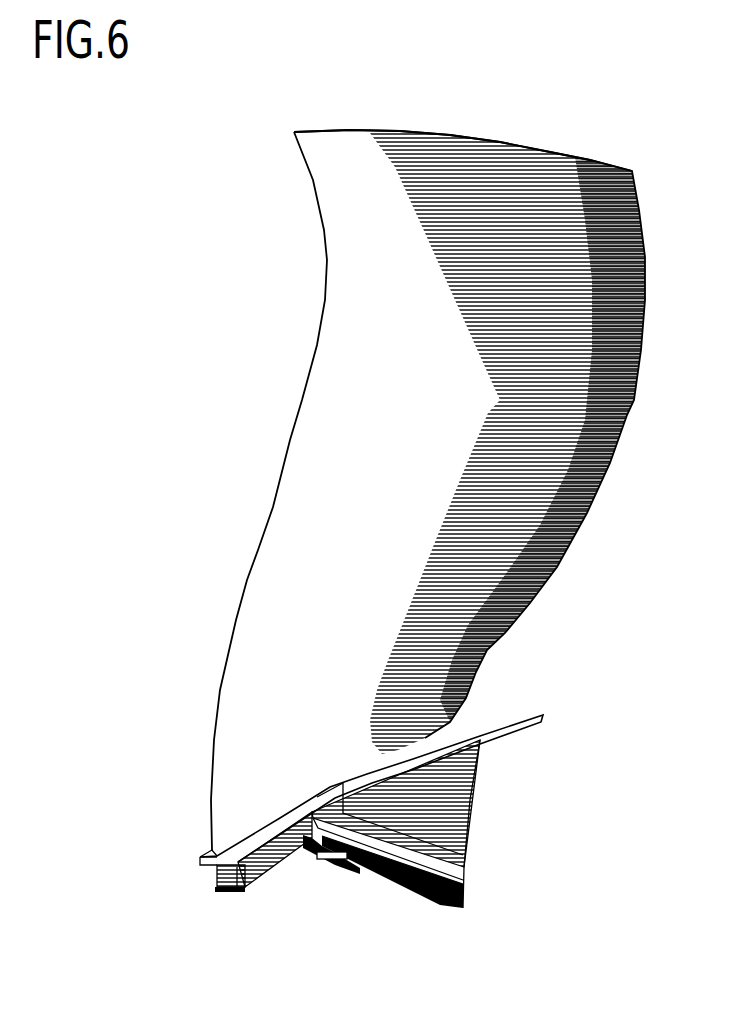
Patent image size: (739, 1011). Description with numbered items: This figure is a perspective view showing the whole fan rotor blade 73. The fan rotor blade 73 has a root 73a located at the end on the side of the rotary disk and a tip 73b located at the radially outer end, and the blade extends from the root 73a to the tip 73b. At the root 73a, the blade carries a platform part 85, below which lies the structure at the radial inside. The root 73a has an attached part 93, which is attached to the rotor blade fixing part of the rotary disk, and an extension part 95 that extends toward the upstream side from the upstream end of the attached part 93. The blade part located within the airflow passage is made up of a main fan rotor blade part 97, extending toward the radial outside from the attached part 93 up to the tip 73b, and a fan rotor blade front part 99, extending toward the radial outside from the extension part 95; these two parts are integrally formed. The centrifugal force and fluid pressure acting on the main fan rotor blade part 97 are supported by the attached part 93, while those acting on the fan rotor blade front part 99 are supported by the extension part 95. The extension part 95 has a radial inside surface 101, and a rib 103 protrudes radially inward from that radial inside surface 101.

The fan rotor blade 73 is at (258, 390).
The root 73a is at (537, 807).
The tip 73b is at (485, 140).
The platform part 85 is at (495, 720).
The attached part 93 is at (462, 892).
The extension part 95 is at (275, 880).
The main fan rotor blade part 97 is at (547, 367).
The fan rotor blade front part 99 is at (238, 745).
The radial inside surface 101 is at (207, 867).
The rib 103 is at (223, 877).